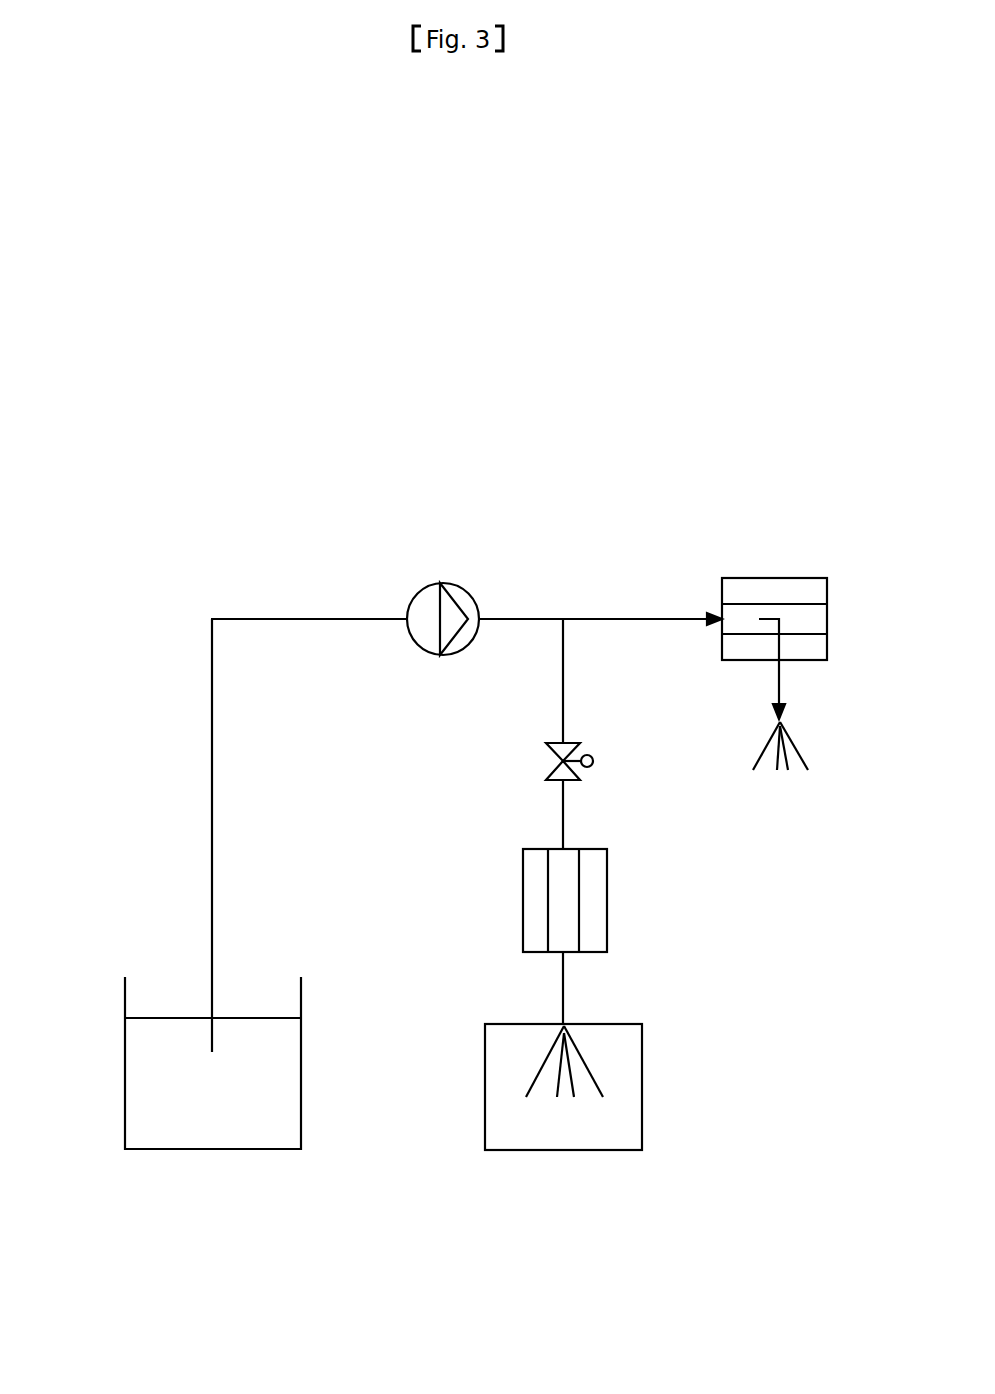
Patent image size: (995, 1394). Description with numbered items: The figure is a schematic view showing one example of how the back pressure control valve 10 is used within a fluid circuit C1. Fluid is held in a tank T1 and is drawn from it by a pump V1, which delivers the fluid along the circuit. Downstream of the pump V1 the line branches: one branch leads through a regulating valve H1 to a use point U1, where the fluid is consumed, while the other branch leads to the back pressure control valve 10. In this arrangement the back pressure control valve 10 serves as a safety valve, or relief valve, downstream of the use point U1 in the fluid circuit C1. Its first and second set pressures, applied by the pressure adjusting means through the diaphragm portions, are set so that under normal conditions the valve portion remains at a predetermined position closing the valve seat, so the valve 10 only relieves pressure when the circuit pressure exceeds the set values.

The fluid circuit C1 is at (211, 614).
The pump V1 is at (433, 592).
The back pressure control valve 10 is at (807, 578).
The regulating valve H1 is at (523, 919).
The use point U1 is at (577, 1023).
The tank T1 is at (214, 1140).